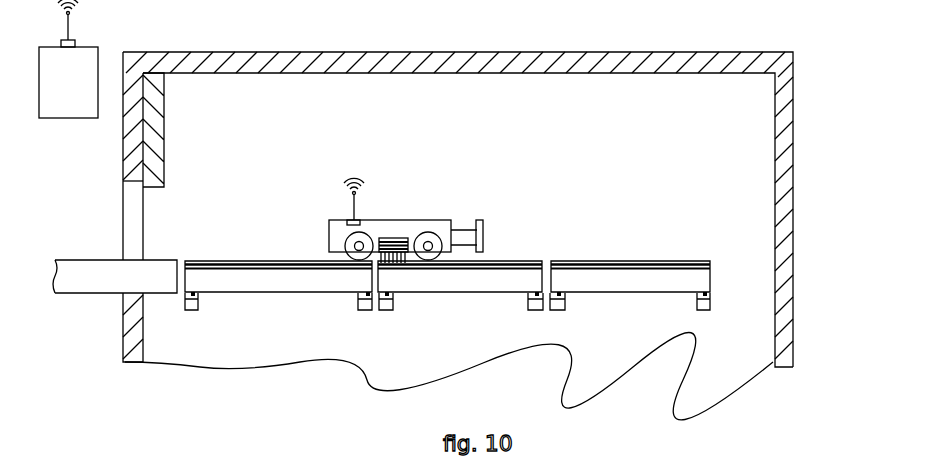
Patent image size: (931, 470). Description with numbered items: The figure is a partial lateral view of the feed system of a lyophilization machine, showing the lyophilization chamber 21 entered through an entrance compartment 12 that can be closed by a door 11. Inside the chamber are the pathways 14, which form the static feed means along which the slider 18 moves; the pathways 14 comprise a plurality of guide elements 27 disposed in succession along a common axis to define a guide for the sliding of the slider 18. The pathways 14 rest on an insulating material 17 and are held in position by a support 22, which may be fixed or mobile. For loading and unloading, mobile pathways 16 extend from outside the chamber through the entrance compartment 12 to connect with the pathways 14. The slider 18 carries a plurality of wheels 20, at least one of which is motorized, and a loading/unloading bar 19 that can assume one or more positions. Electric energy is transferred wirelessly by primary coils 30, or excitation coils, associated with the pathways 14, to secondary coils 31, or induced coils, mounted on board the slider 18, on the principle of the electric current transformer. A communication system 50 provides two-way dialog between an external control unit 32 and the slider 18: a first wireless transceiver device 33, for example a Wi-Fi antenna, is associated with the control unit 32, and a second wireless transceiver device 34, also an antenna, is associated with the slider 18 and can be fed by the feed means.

The door 11 is at (154, 151).
The entrance compartment 12 is at (133, 181).
The pathways 14 is at (447, 275).
The mobile pathways 16 is at (105, 272).
The insulating material 17 is at (191, 294).
The slider 18 is at (378, 230).
The loading/unloading bar 19 is at (478, 230).
The wheels 20 is at (351, 240).
The lyophilization chamber 21 is at (164, 225).
The support 22 is at (195, 303).
The guide elements 27 is at (273, 287).
The primary coils 30 is at (295, 264).
The secondary coils 31 is at (397, 242).
The control unit 32 is at (61, 106).
The first wireless transceiver device 33 is at (85, 41).
The second wireless transceiver device 34 is at (340, 208).
The communication system 50 is at (55, 241).